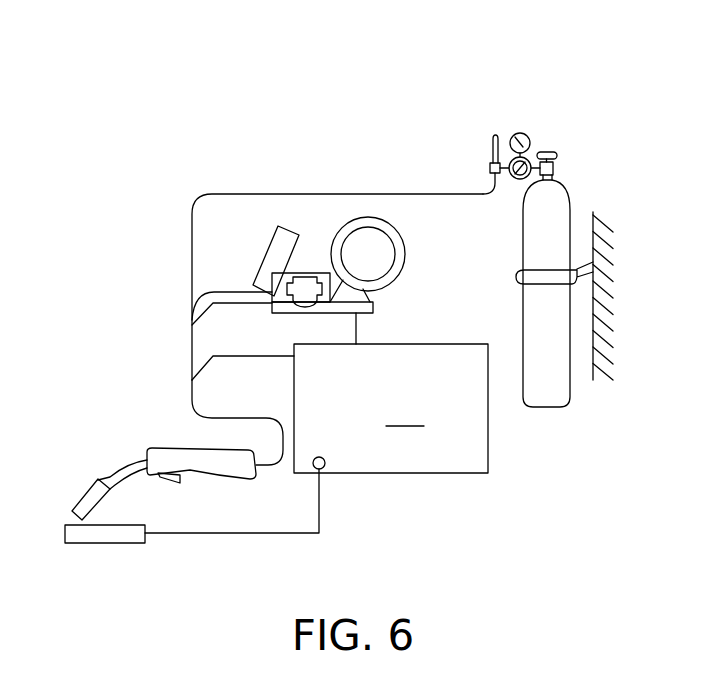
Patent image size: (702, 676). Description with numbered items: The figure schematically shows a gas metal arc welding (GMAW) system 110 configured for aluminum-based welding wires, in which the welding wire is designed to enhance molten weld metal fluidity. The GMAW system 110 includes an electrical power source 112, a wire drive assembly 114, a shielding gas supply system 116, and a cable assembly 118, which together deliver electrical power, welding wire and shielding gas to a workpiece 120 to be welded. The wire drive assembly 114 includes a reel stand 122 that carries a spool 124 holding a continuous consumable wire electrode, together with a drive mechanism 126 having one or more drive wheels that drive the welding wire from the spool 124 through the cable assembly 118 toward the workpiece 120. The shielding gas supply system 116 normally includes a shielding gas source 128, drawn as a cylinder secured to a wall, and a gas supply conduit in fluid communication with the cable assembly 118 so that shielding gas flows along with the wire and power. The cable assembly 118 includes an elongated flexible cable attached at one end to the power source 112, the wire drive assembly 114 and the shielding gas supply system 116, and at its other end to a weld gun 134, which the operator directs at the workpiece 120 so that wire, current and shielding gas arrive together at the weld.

The gas metal arc welding (GMAW) system 110 is at (240, 103).
The electrical power source 112 is at (213, 194).
The wire drive assembly 114 is at (424, 232).
The shielding gas supply system 116 is at (587, 165).
The cable assembly 118 is at (178, 395).
The workpiece 120 is at (112, 535).
The reel stand 122 is at (380, 260).
The spool 124 is at (370, 217).
The drive mechanism 126 is at (277, 213).
The shielding gas source 128 is at (562, 397).
The weld gun 134 is at (155, 449).